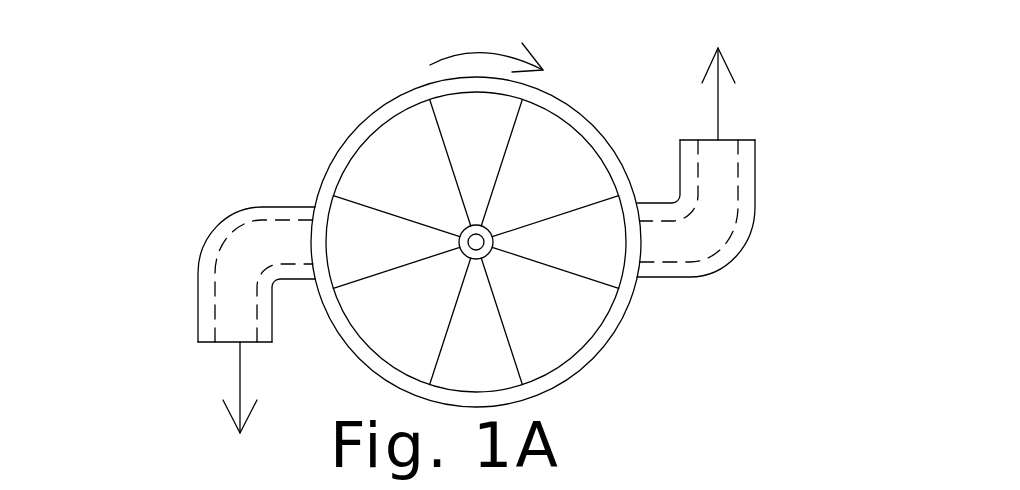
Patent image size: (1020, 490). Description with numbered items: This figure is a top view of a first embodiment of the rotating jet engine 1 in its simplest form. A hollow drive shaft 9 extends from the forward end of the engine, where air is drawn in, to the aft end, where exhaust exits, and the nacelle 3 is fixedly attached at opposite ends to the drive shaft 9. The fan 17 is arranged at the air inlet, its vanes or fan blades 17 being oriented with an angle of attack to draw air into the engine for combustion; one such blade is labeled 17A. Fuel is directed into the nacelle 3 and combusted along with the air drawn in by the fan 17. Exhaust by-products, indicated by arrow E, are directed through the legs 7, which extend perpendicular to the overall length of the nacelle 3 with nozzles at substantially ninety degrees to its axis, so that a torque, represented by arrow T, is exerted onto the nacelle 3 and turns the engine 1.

The rotating jet engine 1 is at (255, 88).
The nacelle 3 is at (370, 132).
The legs 7 is at (205, 252).
The hollow drive shaft 9 is at (472, 238).
The fan blades 17 is at (492, 313).
The blade 17A is at (443, 202).